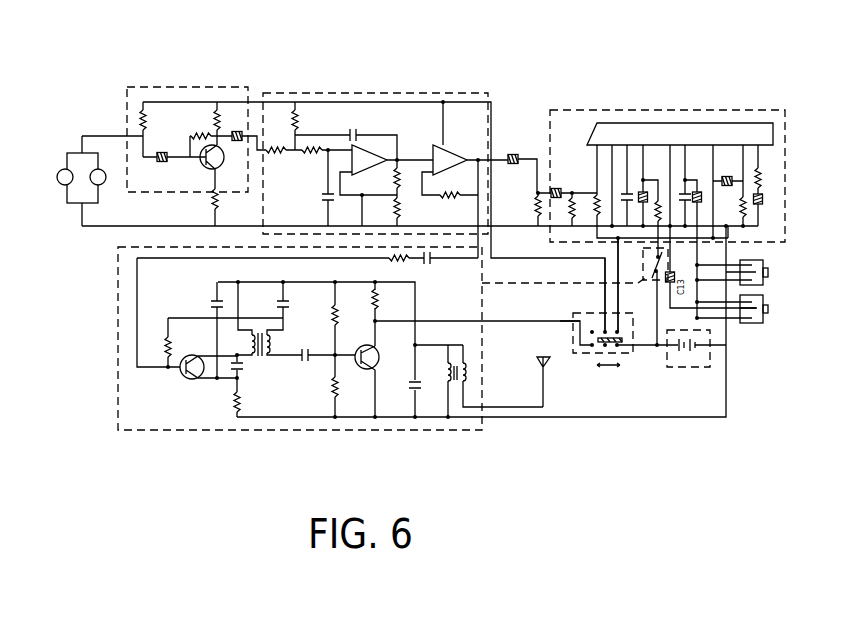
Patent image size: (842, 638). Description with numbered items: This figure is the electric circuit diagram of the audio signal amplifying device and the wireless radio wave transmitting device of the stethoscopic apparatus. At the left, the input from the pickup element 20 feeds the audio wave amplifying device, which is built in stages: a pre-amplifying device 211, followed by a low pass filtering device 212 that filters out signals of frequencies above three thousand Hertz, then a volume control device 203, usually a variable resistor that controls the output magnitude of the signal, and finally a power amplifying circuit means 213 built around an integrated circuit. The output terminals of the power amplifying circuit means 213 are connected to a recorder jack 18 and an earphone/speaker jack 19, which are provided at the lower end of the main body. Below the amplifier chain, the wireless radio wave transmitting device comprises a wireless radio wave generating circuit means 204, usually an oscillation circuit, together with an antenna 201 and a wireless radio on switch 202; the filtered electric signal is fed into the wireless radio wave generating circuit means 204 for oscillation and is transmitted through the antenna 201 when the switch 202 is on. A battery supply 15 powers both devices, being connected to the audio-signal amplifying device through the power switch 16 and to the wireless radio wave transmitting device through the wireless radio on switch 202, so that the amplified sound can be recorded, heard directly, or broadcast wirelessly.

The motors 20 is at (63, 198).
The pre-amplifying device 211 is at (172, 86).
The low pass filtering device 212 is at (423, 92).
The power amplifying circuit means 213 is at (687, 108).
The volume control device 203 is at (485, 283).
The wireless radio wave generating circuit means 204 is at (118, 361).
The antenna 201 is at (543, 393).
The wireless radio on switch 202 is at (638, 355).
The battery supply 15 is at (685, 367).
The power switch 16 is at (680, 258).
The recorder jack 18 is at (768, 273).
The earphone/speaker jack 19 is at (768, 309).